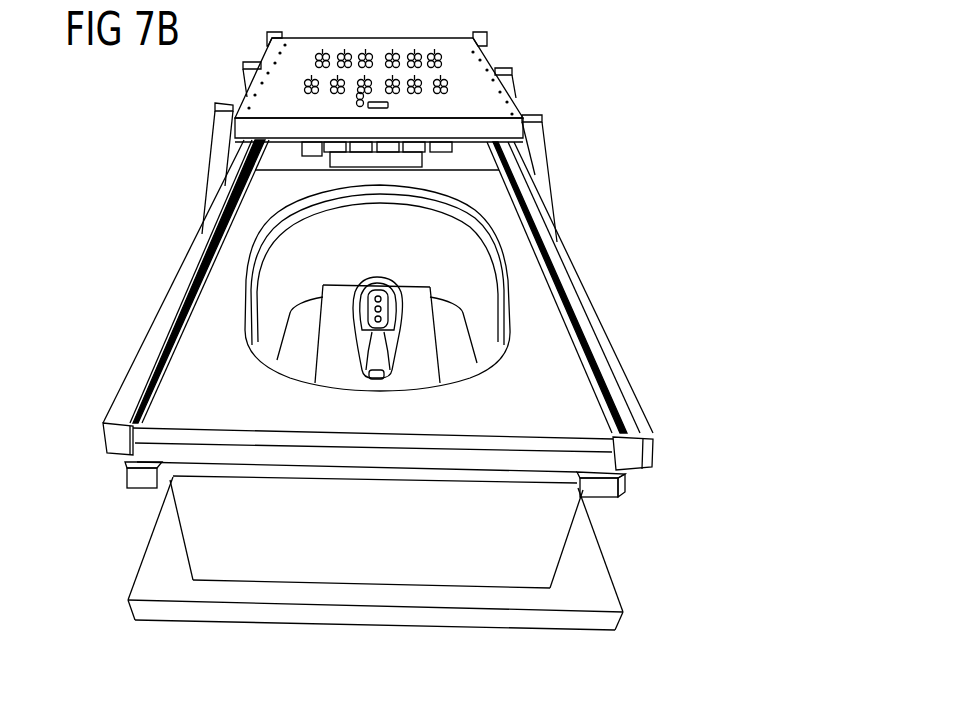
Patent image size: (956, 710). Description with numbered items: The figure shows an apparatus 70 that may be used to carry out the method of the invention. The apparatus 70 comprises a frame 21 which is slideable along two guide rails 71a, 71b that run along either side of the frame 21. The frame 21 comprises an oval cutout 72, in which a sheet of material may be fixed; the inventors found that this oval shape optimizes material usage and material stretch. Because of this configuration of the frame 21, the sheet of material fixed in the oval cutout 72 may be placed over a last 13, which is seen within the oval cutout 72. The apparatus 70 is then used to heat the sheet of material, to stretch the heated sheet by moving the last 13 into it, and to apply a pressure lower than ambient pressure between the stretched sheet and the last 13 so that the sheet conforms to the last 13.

The apparatus 70 is at (116, 192).
The guide rail 71a is at (162, 332).
The guide rail 71b is at (588, 330).
The frame 21 is at (497, 220).
The last 13 is at (398, 312).
The oval cutout 72 is at (470, 377).